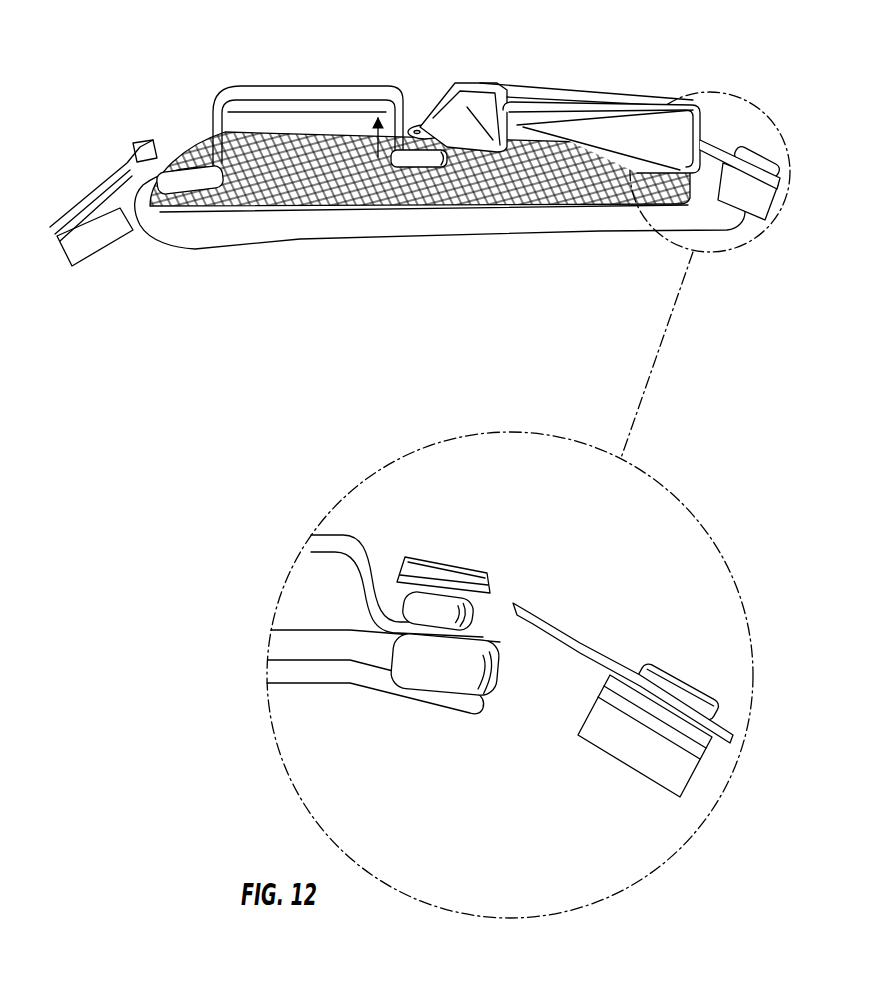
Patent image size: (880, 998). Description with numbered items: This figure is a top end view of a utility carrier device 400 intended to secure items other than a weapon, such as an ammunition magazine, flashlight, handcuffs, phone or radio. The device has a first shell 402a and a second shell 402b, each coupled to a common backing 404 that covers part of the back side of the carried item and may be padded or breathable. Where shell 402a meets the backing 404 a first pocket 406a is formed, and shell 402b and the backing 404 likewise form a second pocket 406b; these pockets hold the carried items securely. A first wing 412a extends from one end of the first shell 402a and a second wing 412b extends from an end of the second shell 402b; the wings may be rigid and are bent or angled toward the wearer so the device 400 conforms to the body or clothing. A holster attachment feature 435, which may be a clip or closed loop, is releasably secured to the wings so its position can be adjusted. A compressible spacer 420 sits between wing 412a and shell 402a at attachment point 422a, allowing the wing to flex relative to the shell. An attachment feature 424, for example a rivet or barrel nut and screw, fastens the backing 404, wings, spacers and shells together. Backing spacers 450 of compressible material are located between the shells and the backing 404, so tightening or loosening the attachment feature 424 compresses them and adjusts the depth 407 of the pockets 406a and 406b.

The utility carrier device 400 is at (186, 94).
The first shell 402a is at (555, 90).
The second shell 402b is at (330, 83).
The backing 404 is at (630, 193).
The first pocket 406a is at (527, 130).
The second pocket 406b is at (263, 158).
The depth of the pockets 407 is at (322, 127).
The first wing 412a is at (732, 156).
The second wing 412b is at (128, 160).
The spacer 420 is at (440, 613).
The attachment point 422a is at (460, 550).
The attachment feature 424 is at (427, 127).
The holster attachment feature 435 is at (105, 242).
The backing spacer 450 is at (187, 182).